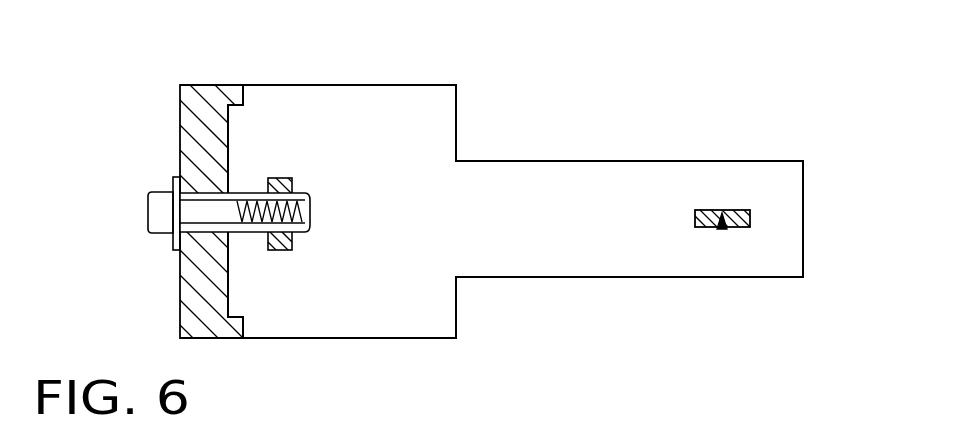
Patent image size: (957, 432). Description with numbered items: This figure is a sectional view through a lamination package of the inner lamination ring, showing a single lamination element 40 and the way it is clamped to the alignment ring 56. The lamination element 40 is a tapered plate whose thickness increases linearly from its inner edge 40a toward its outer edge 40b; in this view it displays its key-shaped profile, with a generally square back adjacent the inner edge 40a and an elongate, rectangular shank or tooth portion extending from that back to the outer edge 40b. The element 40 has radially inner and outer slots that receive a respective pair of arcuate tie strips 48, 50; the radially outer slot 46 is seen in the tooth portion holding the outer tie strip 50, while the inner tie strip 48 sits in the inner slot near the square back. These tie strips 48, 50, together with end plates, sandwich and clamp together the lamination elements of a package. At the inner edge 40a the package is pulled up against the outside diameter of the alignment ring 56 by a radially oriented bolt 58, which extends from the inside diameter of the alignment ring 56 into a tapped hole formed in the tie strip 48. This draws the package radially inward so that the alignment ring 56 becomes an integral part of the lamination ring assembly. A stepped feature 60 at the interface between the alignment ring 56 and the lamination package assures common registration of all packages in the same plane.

The lamination element 40 is at (582, 161).
The inner edge 40a is at (210, 278).
The outer edge 40b is at (803, 258).
The radially outer slot 46 is at (722, 226).
The tie strip 48 is at (291, 188).
The tie strip 50 is at (715, 210).
The alignment ring 56 is at (177, 112).
The bolt 58 is at (151, 191).
The stepped feature 60 is at (247, 60).